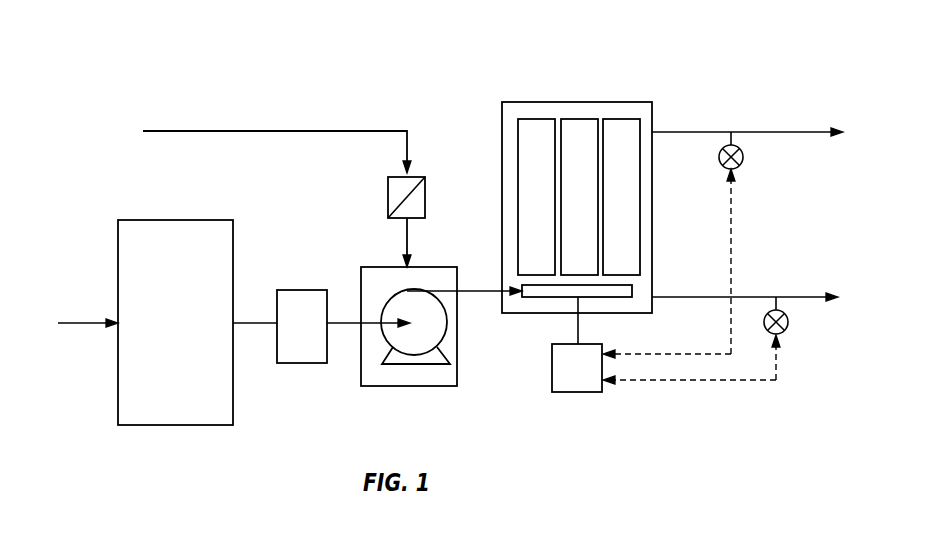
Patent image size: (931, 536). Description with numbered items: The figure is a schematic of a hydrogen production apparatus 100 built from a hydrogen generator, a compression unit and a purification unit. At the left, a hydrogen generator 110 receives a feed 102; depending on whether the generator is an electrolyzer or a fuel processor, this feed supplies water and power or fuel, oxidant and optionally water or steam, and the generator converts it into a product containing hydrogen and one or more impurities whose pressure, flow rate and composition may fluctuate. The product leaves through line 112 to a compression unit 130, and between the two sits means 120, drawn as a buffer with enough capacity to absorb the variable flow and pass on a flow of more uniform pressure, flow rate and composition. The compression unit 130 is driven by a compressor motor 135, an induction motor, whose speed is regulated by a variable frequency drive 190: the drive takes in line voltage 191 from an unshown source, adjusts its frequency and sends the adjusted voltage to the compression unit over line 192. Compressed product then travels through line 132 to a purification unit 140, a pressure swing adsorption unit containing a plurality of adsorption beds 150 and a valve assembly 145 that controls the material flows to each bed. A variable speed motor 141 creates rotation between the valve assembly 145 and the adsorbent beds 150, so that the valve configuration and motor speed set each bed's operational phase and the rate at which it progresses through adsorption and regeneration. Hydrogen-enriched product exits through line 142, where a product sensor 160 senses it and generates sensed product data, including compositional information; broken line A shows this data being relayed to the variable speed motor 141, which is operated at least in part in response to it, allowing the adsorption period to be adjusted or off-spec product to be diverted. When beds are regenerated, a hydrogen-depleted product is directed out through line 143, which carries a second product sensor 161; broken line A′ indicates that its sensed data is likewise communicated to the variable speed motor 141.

The apparatus 100 is at (178, 30).
The feed 102 is at (55, 334).
The hydrogen generator 110 is at (195, 334).
The line 112 is at (239, 325).
The means for reducing fluctuations 120 is at (320, 337).
The compression unit 130 is at (432, 387).
The compressor motor 135 is at (433, 336).
The line 132 is at (486, 290).
The line voltage 191 is at (222, 130).
The variable frequency drive 190 is at (388, 186).
The line 192 is at (407, 241).
The purification unit 140 is at (502, 147).
The adsorption beds 150 is at (578, 118).
The valve assembly 145 is at (605, 297).
The variable speed motor 141 is at (595, 377).
The line 142 is at (680, 131).
The line 143 is at (810, 297).
The product sensor 160 is at (744, 157).
The product sensor 161 is at (790, 322).
The broken line A is at (731, 205).
The broken line A′ is at (668, 381).